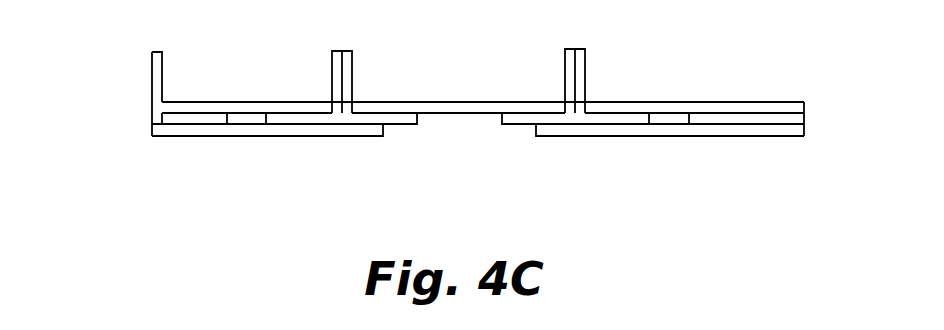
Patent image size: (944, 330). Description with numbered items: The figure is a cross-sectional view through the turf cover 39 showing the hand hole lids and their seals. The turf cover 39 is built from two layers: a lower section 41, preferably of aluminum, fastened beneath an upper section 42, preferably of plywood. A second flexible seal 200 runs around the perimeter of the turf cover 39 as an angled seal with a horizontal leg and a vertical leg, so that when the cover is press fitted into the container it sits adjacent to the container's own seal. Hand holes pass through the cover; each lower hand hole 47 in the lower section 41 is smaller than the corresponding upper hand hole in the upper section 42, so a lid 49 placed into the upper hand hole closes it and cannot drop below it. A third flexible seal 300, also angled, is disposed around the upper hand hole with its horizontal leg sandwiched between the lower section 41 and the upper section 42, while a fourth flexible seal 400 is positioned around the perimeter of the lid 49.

The second flexible seal 200 is at (150, 83).
The third flexible seal 300 is at (331, 62).
The fourth flexible seal 400 is at (354, 60).
The upper section 42 is at (243, 108).
The lower section 41 is at (257, 130).
The lid 49 is at (459, 82).
The lower hand hole 47 is at (465, 152).
The turf cover 39 is at (627, 150).